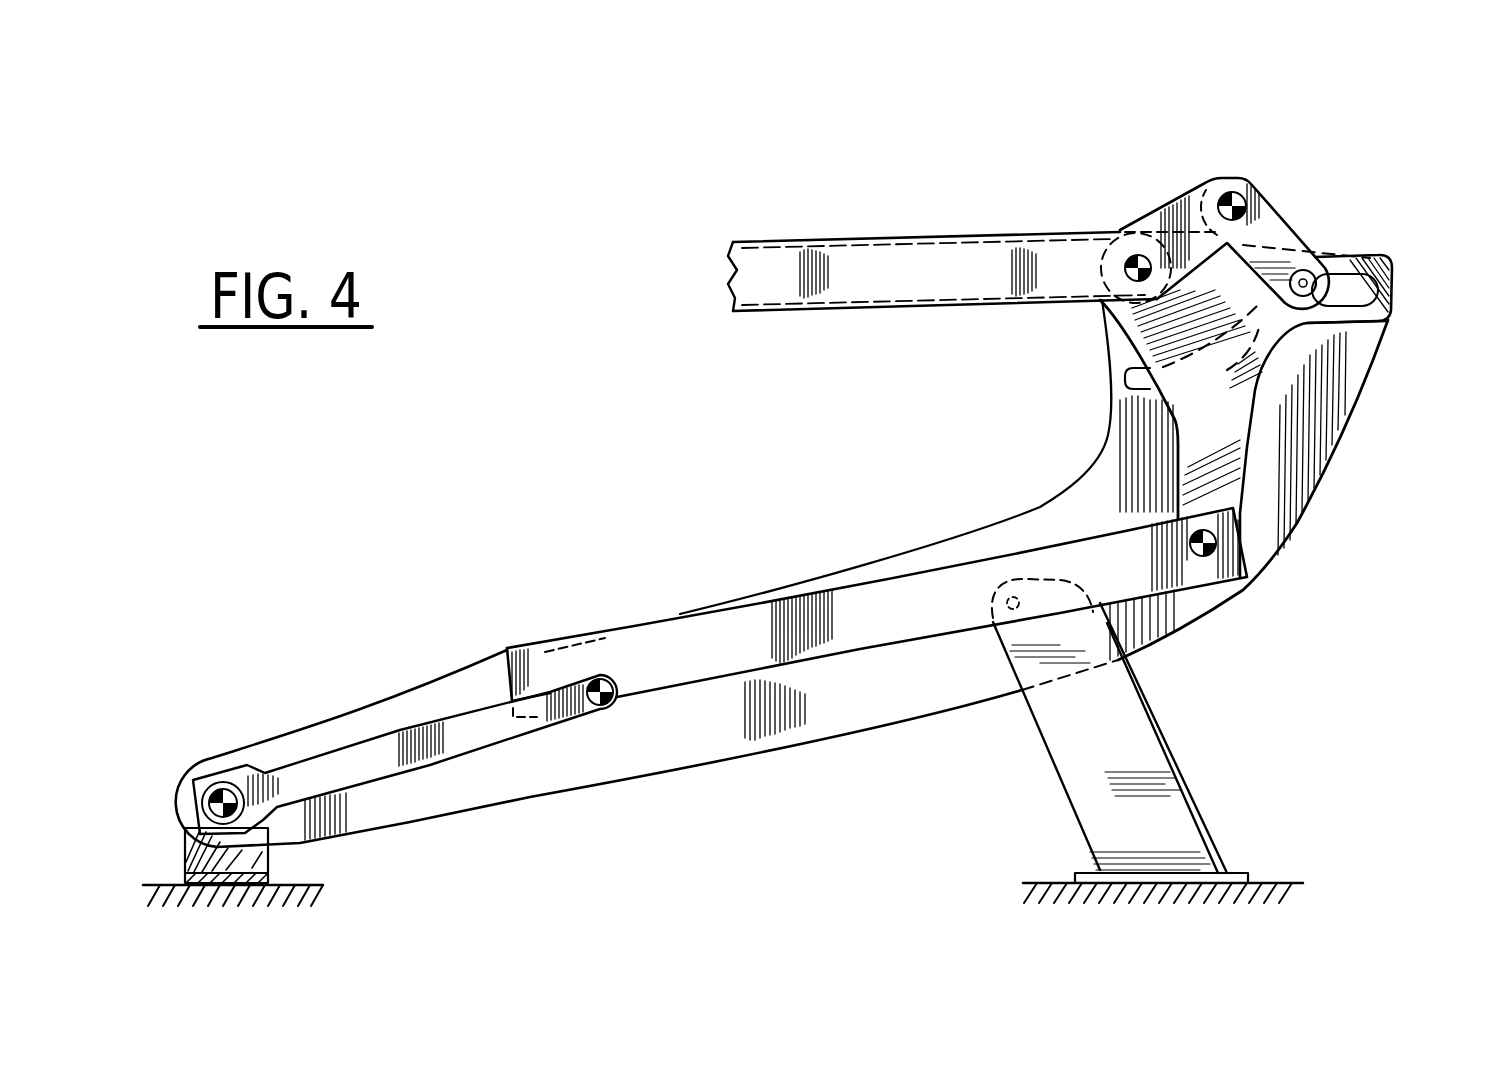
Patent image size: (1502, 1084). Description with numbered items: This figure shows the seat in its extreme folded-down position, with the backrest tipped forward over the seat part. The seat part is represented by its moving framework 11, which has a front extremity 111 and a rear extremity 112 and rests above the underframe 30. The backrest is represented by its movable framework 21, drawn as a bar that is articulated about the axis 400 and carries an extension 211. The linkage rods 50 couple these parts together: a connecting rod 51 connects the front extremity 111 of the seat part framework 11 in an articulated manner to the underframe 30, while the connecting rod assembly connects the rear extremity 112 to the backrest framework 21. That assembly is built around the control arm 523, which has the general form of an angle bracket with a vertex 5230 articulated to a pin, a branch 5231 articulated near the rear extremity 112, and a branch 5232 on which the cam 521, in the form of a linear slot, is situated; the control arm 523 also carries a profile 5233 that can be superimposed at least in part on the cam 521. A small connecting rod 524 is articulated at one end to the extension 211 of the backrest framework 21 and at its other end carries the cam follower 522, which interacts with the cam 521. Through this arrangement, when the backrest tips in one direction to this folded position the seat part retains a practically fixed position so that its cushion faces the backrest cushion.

The axis 400 is at (1132, 258).
The extension 211 is at (1172, 206).
The small connecting rod 524 is at (1287, 215).
The cam follower 522 is at (1307, 279).
The branch 5232 is at (1393, 257).
The vertex 5230 is at (1133, 313).
The profile 5233 is at (1157, 337).
The cam 521 is at (1137, 380).
The branch 5231 is at (1183, 481).
The control arm 523 is at (1242, 435).
The linkage rods 50 is at (1051, 408).
The movable framework 21 is at (934, 270).
The moving framework 11 is at (906, 607).
The front extremity 111 is at (553, 665).
The rear extremity 112 is at (1255, 562).
The connecting rod 51 is at (370, 757).
The underframe 30 is at (781, 750).